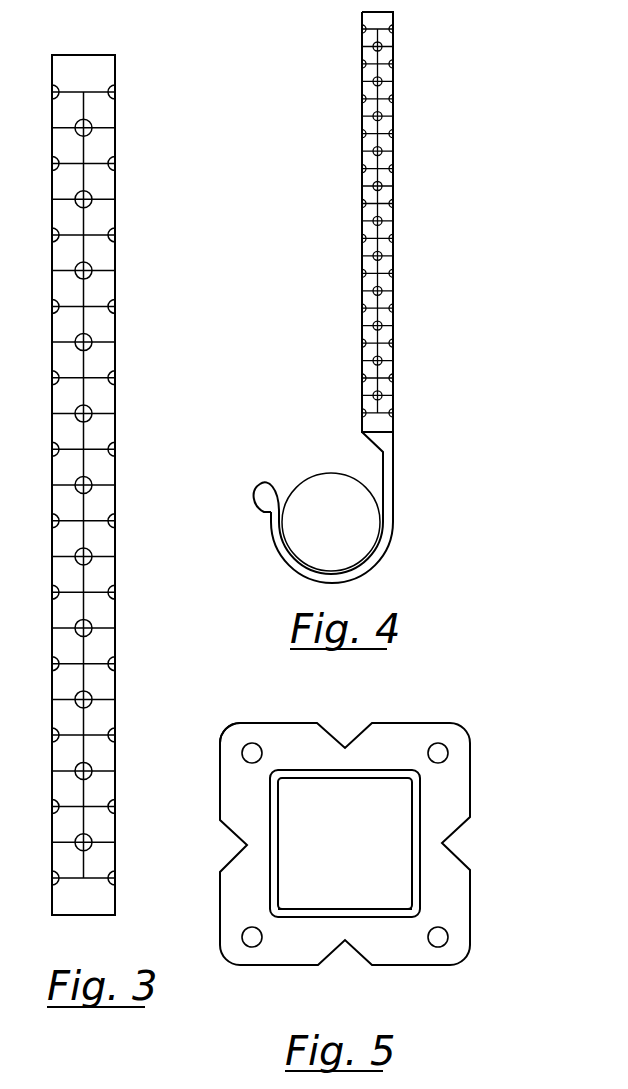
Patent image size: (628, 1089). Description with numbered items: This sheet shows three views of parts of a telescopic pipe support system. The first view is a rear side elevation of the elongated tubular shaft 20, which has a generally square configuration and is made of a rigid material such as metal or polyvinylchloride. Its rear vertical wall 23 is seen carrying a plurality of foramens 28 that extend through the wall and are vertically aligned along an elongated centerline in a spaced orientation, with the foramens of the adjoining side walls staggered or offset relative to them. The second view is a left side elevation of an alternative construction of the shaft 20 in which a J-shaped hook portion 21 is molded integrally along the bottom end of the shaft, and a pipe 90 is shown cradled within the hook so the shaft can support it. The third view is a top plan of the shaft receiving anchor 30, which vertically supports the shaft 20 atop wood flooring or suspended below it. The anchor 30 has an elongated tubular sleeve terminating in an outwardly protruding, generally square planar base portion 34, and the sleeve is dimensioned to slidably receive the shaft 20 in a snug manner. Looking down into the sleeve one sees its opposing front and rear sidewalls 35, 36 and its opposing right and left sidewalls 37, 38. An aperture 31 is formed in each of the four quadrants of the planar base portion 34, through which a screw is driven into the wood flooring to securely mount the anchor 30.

In FIG. 3, the elongated tubular shaft 20 is at (109, 485).
In FIG. 4, the elongated tubular shaft 20 is at (433, 127).
In FIG. 5, the elongated tubular shaft 20 is at (288, 890).
In FIG. 4, the J-shaped hook portion 21 is at (394, 482).
In FIG. 3, the rear vertical wall 23 is at (102, 403).
In FIG. 3, the foramens 28 is at (87, 265).
In FIG. 5, the shaft receiving anchor 30 is at (367, 843).
In FIG. 5, the aperture 31 is at (254, 744).
In FIG. 5, the planar base portion 34 is at (219, 758).
In FIG. 5, the front sidewall 35 is at (322, 912).
In FIG. 5, the rear sidewall 36 is at (471, 778).
In FIG. 5, the right sidewall 37 is at (272, 830).
In FIG. 5, the left sidewall 38 is at (414, 882).
In FIG. 4, the pipe 90 is at (319, 474).